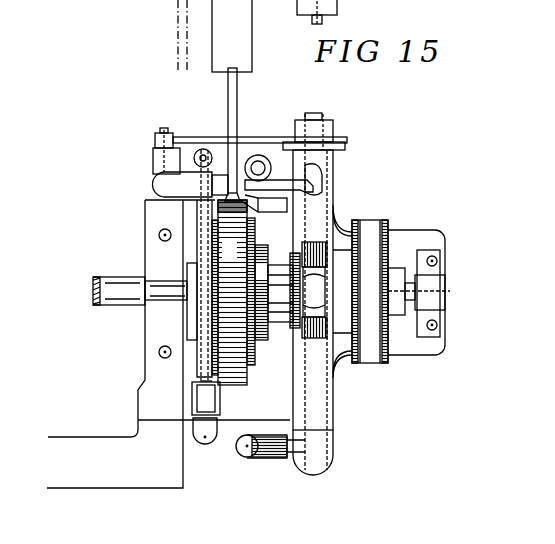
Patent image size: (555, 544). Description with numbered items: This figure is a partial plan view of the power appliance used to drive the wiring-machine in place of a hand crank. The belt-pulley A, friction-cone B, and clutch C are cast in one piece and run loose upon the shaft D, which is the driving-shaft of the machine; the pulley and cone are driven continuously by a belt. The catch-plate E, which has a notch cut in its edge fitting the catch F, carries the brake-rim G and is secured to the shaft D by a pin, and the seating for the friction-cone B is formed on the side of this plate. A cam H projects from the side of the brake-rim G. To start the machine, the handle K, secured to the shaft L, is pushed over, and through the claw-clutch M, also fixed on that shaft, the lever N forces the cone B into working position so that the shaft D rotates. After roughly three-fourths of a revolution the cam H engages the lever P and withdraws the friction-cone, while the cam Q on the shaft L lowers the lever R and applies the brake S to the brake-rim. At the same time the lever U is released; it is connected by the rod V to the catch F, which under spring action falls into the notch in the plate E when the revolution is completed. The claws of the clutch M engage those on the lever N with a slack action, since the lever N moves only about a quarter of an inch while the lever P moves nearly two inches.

The brake S is at (237, 134).
The lever R is at (280, 140).
The cam Q is at (314, 131).
The lever U is at (209, 164).
The rod V is at (195, 207).
The shaft D is at (172, 282).
The catch-plate E is at (197, 301).
The brake-rim G is at (233, 292).
The friction-cone B is at (277, 292).
The shaft L is at (318, 463).
The catch F is at (308, 172).
The lever P is at (280, 192).
The cam H is at (285, 212).
The lever N is at (313, 336).
The clutch C is at (314, 292).
The belt-pulley A is at (360, 291).
The claw-clutch M is at (202, 375).
The handle K is at (272, 458).